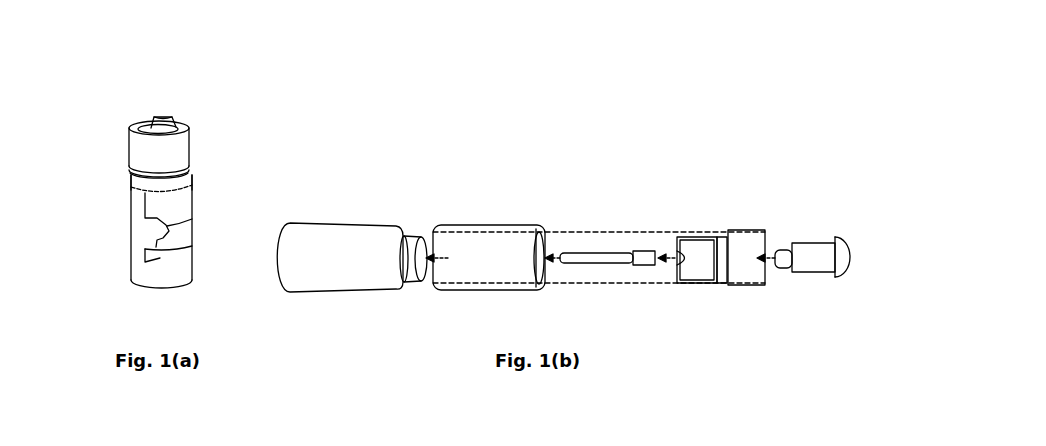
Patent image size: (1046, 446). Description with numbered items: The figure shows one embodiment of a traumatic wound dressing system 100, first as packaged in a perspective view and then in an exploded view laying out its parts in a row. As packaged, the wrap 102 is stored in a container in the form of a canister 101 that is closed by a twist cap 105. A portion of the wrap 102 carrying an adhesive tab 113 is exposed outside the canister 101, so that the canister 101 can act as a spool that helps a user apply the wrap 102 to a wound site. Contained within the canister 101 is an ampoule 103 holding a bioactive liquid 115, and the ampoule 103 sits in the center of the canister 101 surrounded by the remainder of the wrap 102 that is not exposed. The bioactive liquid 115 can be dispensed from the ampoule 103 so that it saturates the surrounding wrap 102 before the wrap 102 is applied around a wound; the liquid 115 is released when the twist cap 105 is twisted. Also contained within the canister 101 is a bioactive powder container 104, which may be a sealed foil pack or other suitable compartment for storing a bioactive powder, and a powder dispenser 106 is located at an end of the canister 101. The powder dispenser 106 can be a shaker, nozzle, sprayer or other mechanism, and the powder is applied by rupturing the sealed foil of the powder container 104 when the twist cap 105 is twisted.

In FIG. 1A, the traumatic wound dressing system 100 is at (178, 89).
In FIG. 1A, the canister 101 is at (178, 183).
In FIG. 1B, the canister 101 is at (333, 238).
In FIG. 1A, the wrap 102 is at (132, 210).
In FIG. 1B, the wrap 102 is at (470, 237).
In FIG. 1B, the ampoule 103 is at (652, 255).
In FIG. 1B, the bioactive powder container 104 is at (697, 245).
In FIG. 1A, the twist cap 105 is at (160, 152).
In FIG. 1B, the twist cap 105 is at (745, 253).
In FIG. 1A, the powder dispenser 106 is at (160, 130).
In FIG. 1B, the powder dispenser 106 is at (810, 258).
In FIG. 1A, the adhesive tab 113 is at (150, 232).
In FIG. 1B, the bioactive liquid 115 is at (602, 257).